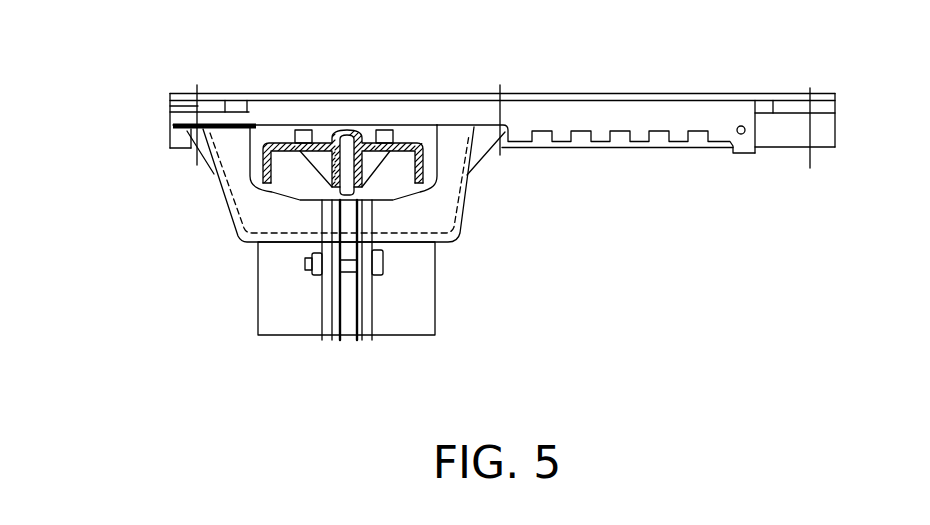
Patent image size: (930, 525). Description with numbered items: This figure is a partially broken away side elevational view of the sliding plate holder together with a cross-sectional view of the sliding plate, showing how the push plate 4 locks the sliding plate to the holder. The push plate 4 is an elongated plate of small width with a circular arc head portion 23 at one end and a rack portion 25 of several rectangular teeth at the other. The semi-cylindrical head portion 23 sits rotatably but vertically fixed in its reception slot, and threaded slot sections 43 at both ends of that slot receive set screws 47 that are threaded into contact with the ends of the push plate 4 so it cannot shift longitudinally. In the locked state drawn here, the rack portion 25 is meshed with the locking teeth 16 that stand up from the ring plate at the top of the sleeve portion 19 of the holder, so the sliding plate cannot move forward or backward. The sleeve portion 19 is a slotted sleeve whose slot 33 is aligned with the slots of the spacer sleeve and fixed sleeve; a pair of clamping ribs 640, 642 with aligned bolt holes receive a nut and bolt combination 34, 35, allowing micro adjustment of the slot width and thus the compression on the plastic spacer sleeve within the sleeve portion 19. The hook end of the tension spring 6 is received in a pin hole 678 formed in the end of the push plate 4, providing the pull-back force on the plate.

The push plate 4 is at (638, 118).
The tension spring 6 is at (703, 99).
The locking teeth 16 is at (312, 137).
The sleeve portion 19 is at (427, 302).
The circular arc head portion 23 is at (632, 93).
The rack portion 25 is at (680, 135).
The slot 33 is at (349, 232).
The bolt 34 is at (378, 243).
The nut 35 is at (312, 267).
The threaded slot section 43 is at (192, 104).
The set screw 47 is at (236, 108).
The clamping rib 640 is at (360, 340).
The clamping rib 642 is at (332, 340).
The pin hole 678 is at (745, 125).